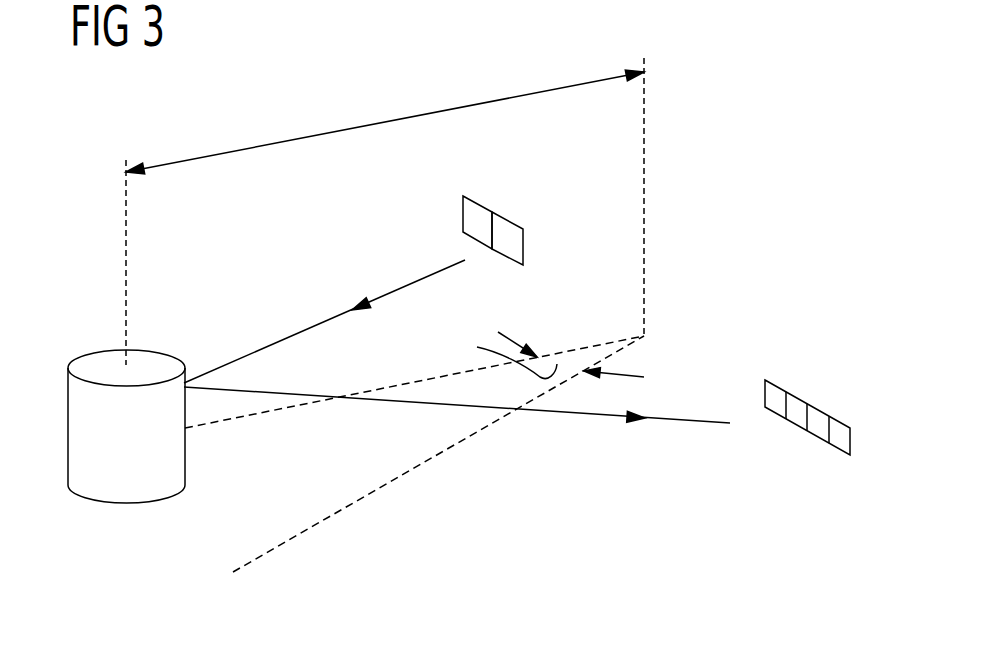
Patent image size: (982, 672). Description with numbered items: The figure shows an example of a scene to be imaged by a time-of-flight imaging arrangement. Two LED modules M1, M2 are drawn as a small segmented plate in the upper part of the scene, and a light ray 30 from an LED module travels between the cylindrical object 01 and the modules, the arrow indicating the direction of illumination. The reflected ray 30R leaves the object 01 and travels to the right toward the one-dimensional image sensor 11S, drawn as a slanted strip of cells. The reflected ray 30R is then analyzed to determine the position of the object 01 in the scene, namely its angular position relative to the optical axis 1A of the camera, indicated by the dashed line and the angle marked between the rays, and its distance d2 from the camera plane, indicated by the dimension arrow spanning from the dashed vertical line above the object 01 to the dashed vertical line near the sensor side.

The distance from the camera plane d2 is at (360, 127).
The object 01 is at (131, 497).
The light ray 30 is at (303, 330).
The reflected ray 30R is at (580, 415).
The LED module M1 is at (510, 217).
The LED module M2 is at (480, 203).
The optical axis of the camera 1A is at (310, 530).
The one-dimensional image sensor 11S is at (808, 400).